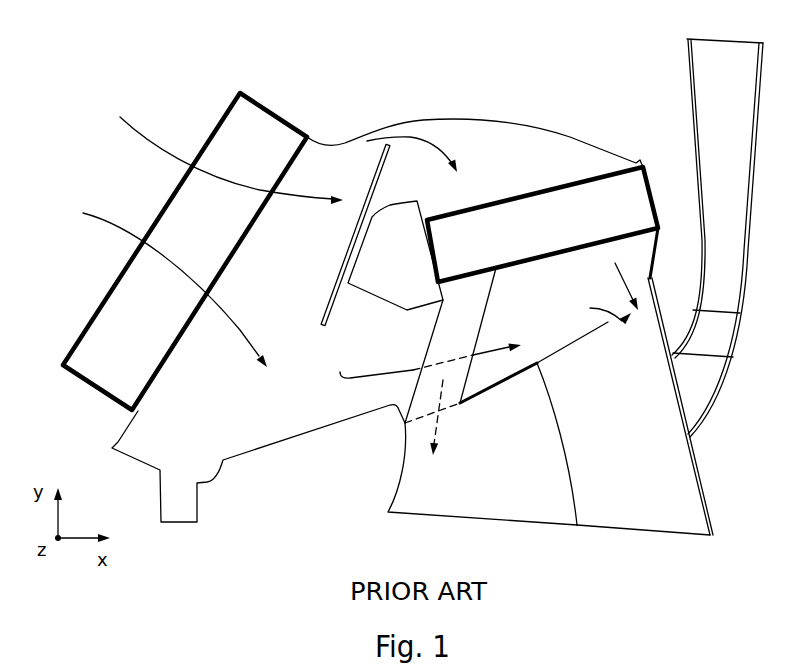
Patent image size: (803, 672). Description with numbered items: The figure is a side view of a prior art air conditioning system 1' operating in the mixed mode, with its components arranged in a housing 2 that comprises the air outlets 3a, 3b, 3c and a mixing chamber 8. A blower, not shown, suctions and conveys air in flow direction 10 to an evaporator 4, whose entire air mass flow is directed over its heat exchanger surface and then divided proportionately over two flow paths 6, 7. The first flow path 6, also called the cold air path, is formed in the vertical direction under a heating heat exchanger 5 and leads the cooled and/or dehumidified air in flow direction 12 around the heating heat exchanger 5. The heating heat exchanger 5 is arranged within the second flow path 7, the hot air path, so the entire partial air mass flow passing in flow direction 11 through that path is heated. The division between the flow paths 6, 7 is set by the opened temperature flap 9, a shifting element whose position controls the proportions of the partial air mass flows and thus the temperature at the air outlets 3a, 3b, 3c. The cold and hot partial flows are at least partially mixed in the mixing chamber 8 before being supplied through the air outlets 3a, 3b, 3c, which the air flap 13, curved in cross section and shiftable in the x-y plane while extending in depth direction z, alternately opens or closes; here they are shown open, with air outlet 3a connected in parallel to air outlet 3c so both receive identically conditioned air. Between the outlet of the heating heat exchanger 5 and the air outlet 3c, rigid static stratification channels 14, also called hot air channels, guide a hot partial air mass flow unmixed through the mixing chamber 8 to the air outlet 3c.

The air conditioning system 1' is at (370, 267).
The housing 2 is at (423, 120).
The air outlet 3a is at (743, 98).
The air outlet 3b is at (647, 510).
The air outlet 3c is at (498, 510).
The evaporator 4 is at (230, 137).
The heating heat exchanger 5 is at (553, 215).
The first flow path 6 is at (379, 355).
The second flow path 7 is at (506, 174).
The mixing chamber 8 is at (559, 313).
The temperature flap 9 is at (364, 218).
The flow direction 10 is at (160, 153).
The flow direction 11 is at (440, 143).
The flow direction 12 is at (353, 378).
The air flap 13 is at (562, 352).
The stratification channels 14 is at (474, 343).